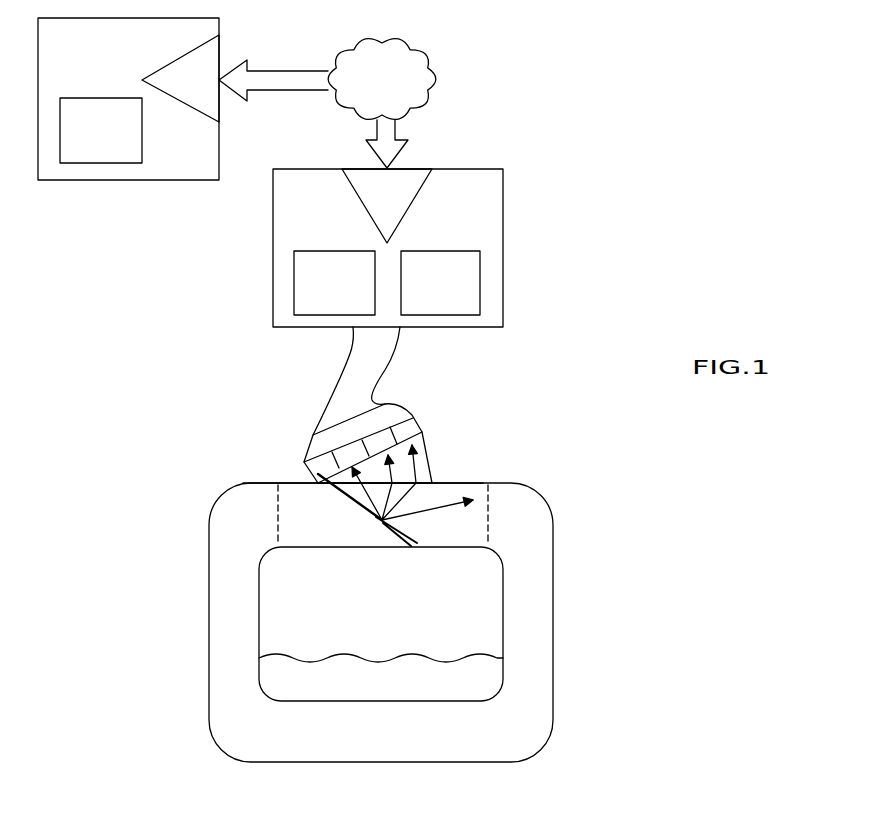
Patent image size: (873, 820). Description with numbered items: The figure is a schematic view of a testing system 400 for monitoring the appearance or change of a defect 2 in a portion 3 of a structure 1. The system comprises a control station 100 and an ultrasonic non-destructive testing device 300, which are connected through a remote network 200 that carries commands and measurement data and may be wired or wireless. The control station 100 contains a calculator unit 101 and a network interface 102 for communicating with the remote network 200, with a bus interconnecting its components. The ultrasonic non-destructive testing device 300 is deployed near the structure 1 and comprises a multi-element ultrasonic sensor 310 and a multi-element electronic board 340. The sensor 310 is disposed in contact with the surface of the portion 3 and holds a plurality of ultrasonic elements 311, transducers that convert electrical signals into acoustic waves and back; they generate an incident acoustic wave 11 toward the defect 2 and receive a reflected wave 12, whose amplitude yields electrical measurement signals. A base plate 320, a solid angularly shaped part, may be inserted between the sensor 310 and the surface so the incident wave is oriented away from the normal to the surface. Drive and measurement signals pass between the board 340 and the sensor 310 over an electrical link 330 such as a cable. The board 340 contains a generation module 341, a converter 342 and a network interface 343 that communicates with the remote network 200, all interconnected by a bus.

The structure 1 is at (209, 599).
The defect 2 is at (382, 522).
The portion 3 is at (243, 483).
The incident acoustic wave 11 is at (278, 496).
The reflected wave 12 is at (489, 503).
The control station 100 is at (128, 99).
The calculator unit 101 is at (101, 130).
The network interface 102 is at (180, 78).
The remote network 200 is at (382, 79).
The ultrasonic non-destructive testing device 300 is at (351, 443).
The multi-element ultrasonic sensor 310 is at (408, 409).
The ultrasonic element 311 is at (420, 430).
The base plate 320 is at (432, 460).
The electrical link 330 is at (348, 362).
The multi-element electronic board 340 is at (388, 248).
The generation module 341 is at (334, 283).
The converter 342 is at (440, 283).
The network interface 343 is at (387, 206).
The testing system 400 is at (118, 263).